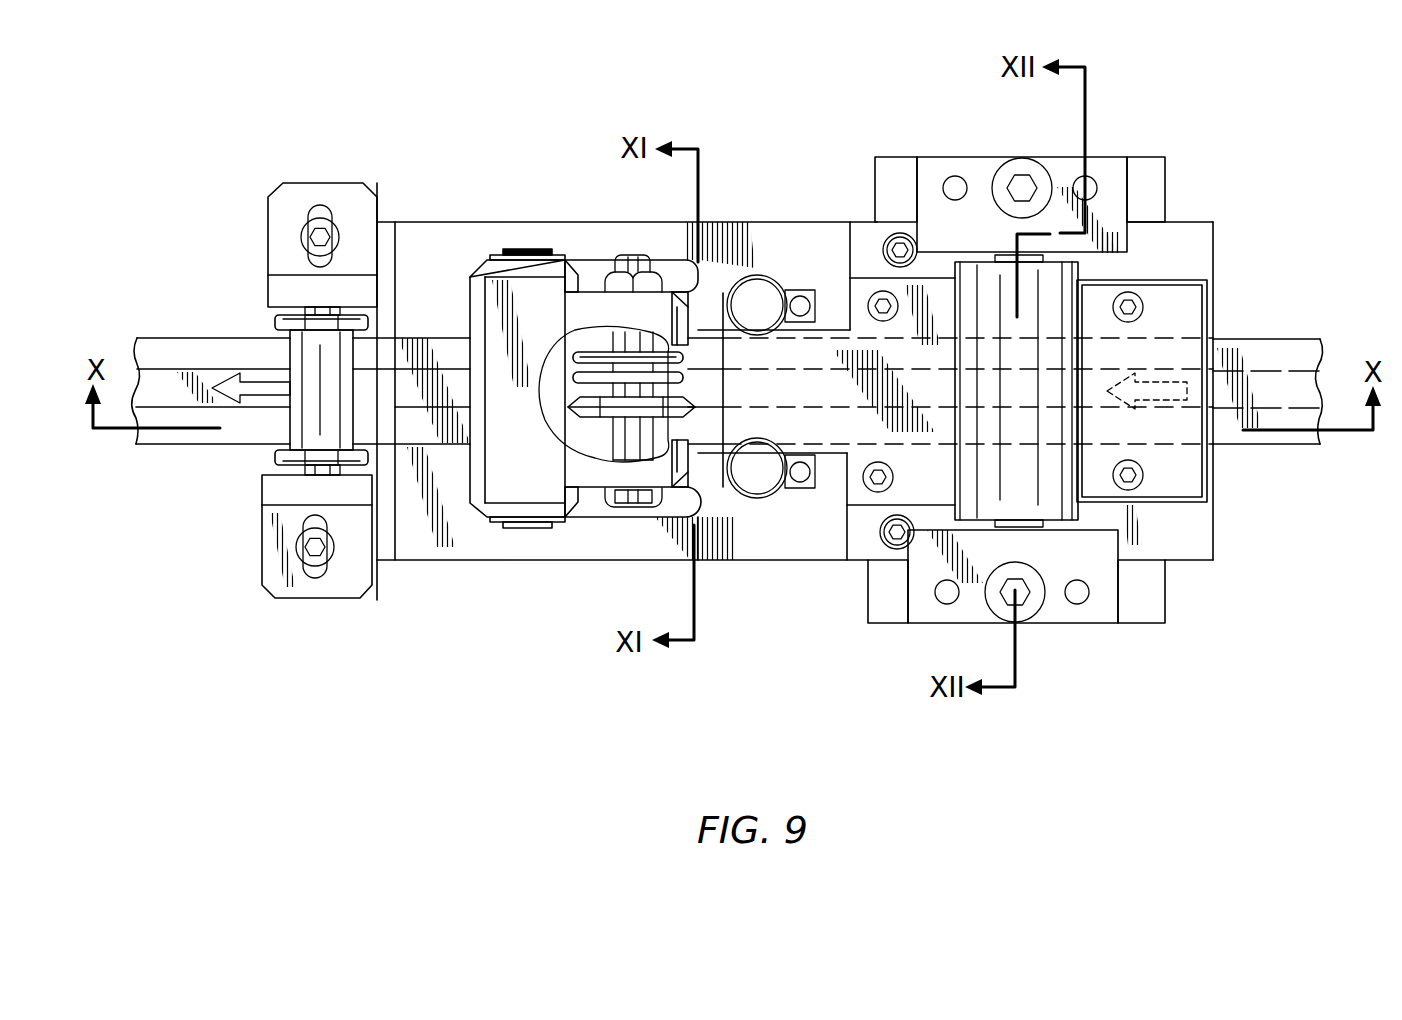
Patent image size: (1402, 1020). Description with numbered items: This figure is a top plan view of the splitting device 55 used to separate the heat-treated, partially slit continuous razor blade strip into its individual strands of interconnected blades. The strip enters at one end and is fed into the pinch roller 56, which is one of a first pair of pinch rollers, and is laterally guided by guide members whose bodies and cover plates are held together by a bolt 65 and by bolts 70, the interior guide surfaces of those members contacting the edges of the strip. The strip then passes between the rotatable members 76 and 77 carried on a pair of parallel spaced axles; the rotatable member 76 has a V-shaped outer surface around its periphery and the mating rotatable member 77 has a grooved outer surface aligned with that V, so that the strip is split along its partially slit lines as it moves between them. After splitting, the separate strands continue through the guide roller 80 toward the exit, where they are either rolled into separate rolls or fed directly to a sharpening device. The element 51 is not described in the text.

The shaft 51 is at (1254, 334).
The splitting device 55 is at (738, 216).
The pinch roller 56 is at (1050, 288).
The bolt 65 is at (1141, 301).
The bolts 70 is at (872, 292).
The rotatable member 76 is at (603, 413).
The second rotatable member 77 is at (569, 330).
The guide roller 80 is at (298, 360).